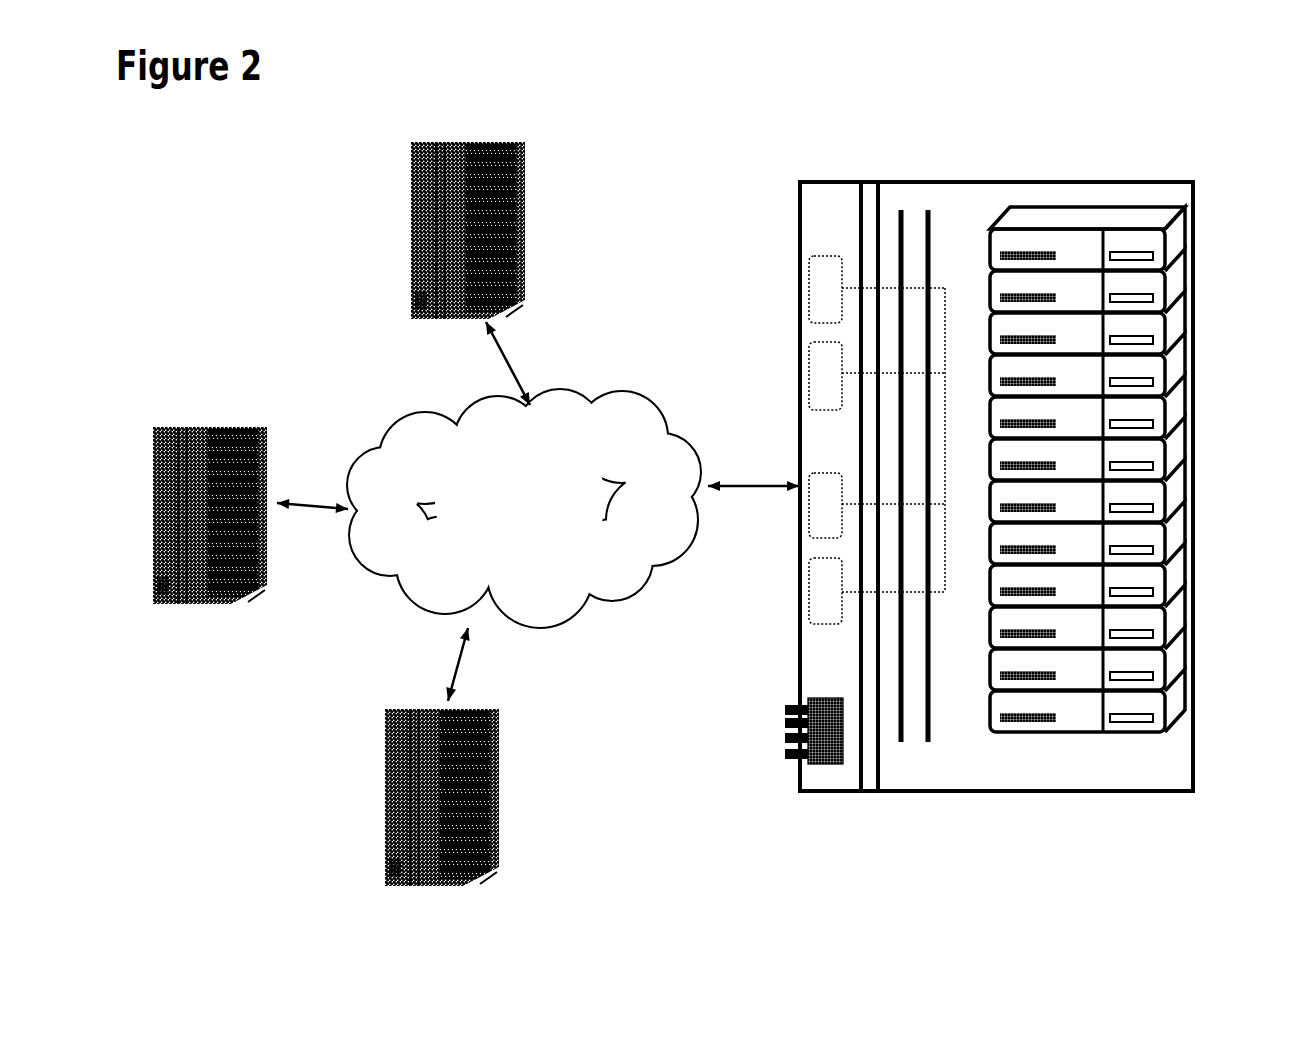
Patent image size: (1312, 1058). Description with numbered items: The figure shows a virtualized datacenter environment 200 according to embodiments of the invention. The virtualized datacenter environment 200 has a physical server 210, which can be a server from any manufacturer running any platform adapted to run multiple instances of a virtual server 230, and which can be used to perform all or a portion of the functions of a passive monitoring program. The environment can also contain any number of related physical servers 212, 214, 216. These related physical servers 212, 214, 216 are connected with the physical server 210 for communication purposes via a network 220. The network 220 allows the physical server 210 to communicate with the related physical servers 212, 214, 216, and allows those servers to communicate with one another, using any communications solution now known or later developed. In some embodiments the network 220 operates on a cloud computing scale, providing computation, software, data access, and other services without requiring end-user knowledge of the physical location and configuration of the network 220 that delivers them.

The virtualized datacenter environment 200 is at (1212, 106).
The physical server 210 is at (796, 196).
The related physical server 212 is at (410, 205).
The related physical server 214 is at (198, 424).
The related physical server 216 is at (385, 778).
The network 220 is at (524, 508).
The virtual server 230 is at (1200, 207).